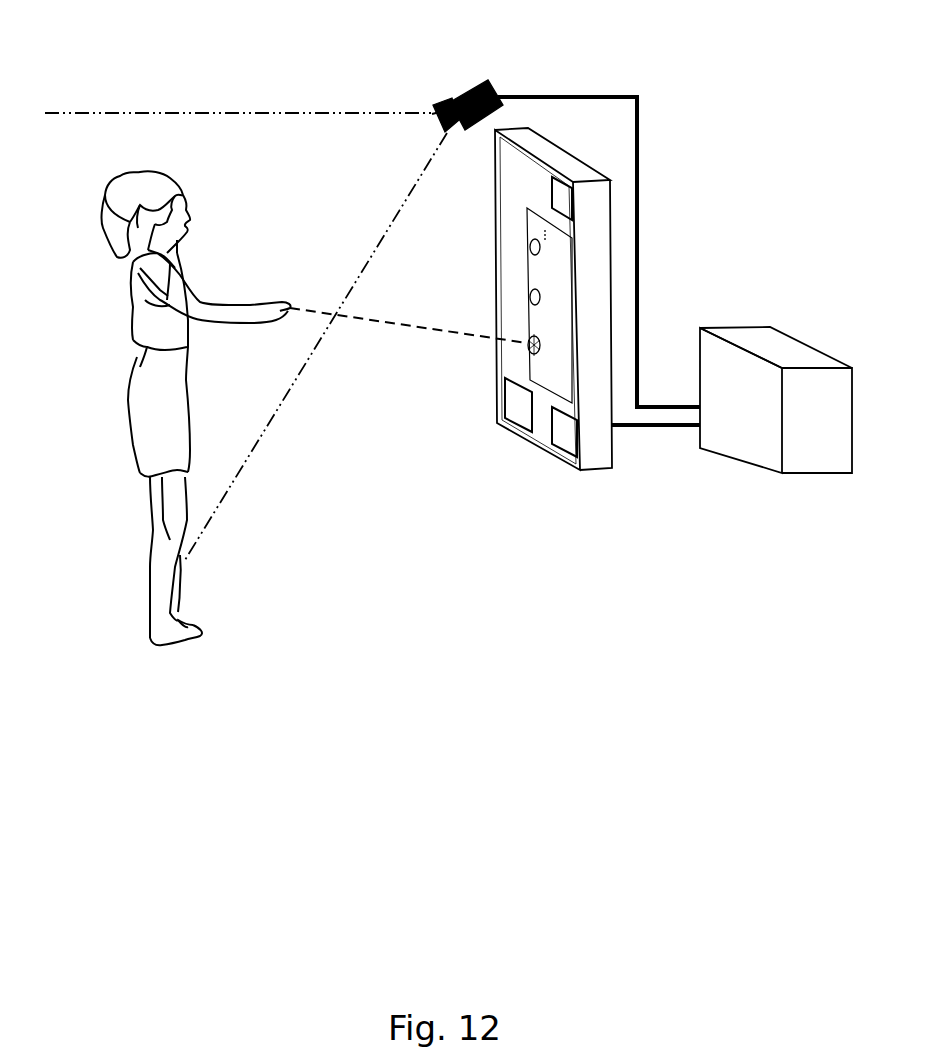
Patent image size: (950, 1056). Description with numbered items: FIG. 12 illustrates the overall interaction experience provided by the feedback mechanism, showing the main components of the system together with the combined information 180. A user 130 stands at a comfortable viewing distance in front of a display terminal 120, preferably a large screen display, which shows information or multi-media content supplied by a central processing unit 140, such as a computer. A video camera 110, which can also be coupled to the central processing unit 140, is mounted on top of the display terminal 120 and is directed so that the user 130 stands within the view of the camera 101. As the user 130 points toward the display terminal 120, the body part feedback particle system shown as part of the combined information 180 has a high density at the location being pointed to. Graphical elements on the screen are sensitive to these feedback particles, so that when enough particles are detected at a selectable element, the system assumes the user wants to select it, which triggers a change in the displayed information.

The view of the camera 101 is at (331, 92).
The video camera 110 is at (498, 80).
The display terminal 120 is at (590, 473).
The user 130 is at (130, 297).
The central processing unit 140 is at (755, 447).
The combined information 180 is at (503, 347).